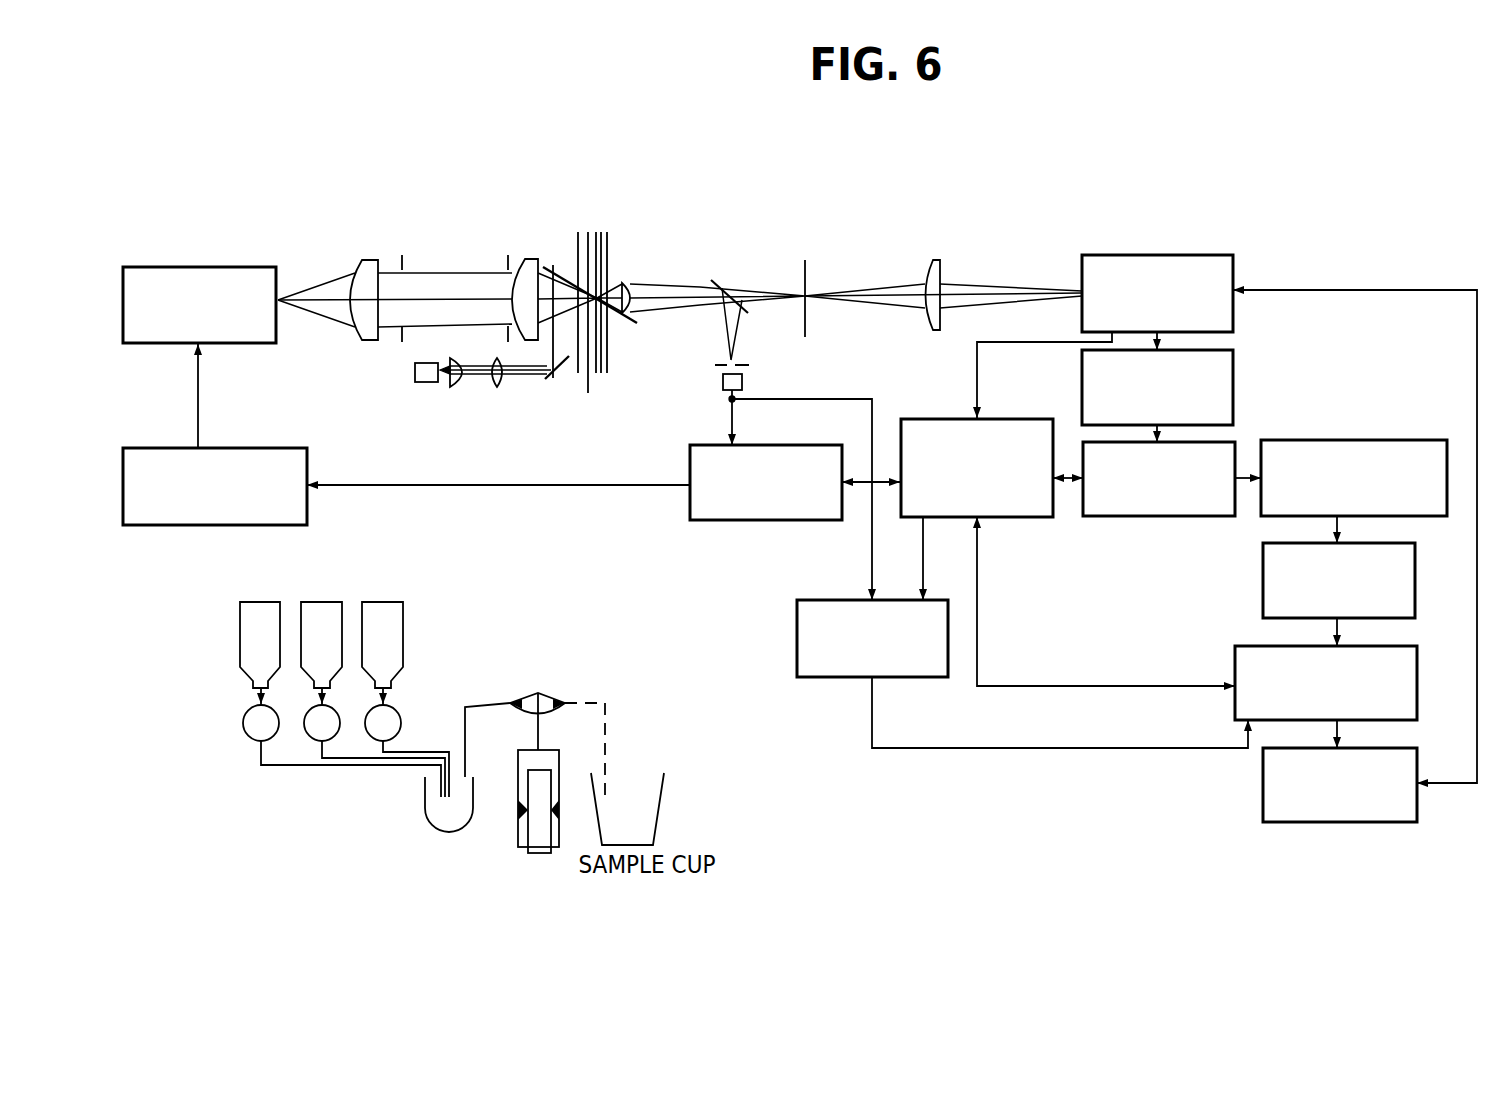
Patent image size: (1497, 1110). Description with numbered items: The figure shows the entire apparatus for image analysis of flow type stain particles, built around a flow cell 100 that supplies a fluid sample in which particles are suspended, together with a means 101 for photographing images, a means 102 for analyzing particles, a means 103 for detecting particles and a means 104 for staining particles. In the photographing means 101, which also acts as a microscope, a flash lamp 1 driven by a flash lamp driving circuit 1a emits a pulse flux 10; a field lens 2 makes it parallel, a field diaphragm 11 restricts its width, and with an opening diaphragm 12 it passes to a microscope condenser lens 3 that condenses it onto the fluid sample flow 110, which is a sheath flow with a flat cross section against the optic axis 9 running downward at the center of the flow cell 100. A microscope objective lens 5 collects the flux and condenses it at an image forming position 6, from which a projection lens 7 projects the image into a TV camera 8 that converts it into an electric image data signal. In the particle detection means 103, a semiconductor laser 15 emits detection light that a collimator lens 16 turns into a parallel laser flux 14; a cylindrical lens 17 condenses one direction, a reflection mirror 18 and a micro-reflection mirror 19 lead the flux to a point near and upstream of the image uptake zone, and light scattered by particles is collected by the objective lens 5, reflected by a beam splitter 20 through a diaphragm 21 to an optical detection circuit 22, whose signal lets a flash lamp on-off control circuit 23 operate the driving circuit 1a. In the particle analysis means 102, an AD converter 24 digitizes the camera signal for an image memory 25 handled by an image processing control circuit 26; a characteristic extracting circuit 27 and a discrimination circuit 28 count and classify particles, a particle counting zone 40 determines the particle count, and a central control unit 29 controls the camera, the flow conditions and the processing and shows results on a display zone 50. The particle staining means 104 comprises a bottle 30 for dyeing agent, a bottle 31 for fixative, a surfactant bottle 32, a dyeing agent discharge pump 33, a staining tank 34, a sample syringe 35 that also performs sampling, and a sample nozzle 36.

The flash lamp 1 is at (247, 267).
The flash lamp driving circuit 1a is at (268, 448).
The field lens 2 is at (370, 258).
The microscope condenser lens 3 is at (528, 258).
The microscope objective lens 5 is at (630, 282).
The image forming position 6 is at (805, 260).
The projection lens 7 is at (935, 259).
The TV camera 8 is at (1155, 255).
The optic axis 9 is at (433, 299).
The pulse flux 10 is at (428, 273).
The field diaphragm 11 is at (402, 255).
The opening diaphragm 12 is at (508, 255).
The parallel laser flux 14 is at (722, 407).
The semiconductor laser 15 is at (417, 383).
The collimator lens 16 is at (453, 390).
The cylindrical lens 17 is at (497, 388).
The reflection mirror 18 is at (550, 385).
The micro-reflection mirror 19 is at (553, 265).
The beam splitter 20 is at (728, 285).
The diaphragm 21 is at (745, 363).
The optical detection circuit 22 is at (742, 382).
The flash lamp on-off control circuit 23 is at (758, 445).
The AD converter 24 is at (1233, 372).
The image memory 25 is at (1235, 442).
The image processing control circuit 26 is at (915, 418).
The characteristic extracting circuit 27 is at (1420, 440).
The discrimination (recognition) circuit 28 is at (1415, 573).
The central control unit 29 is at (1417, 677).
The bottle 30 is at (385, 602).
The bottle 31 is at (323, 602).
The surfactant bottle 32 is at (262, 602).
The dyeing agent discharge pump 33 is at (278, 717).
The staining tank 34 is at (425, 815).
The sample syringe 35 is at (559, 845).
The sample nozzle 36 is at (487, 705).
The particle counting zone 40 is at (797, 672).
The display zone 50 is at (1417, 758).
The flow cell 100 is at (608, 255).
The means for photographing images 101 is at (989, 170).
The means for analyzing particles 102 is at (1355, 536).
The means for detecting particles 103 is at (604, 337).
The means for staining particles 104 is at (216, 593).
The fluid sample flow 110 is at (595, 232).